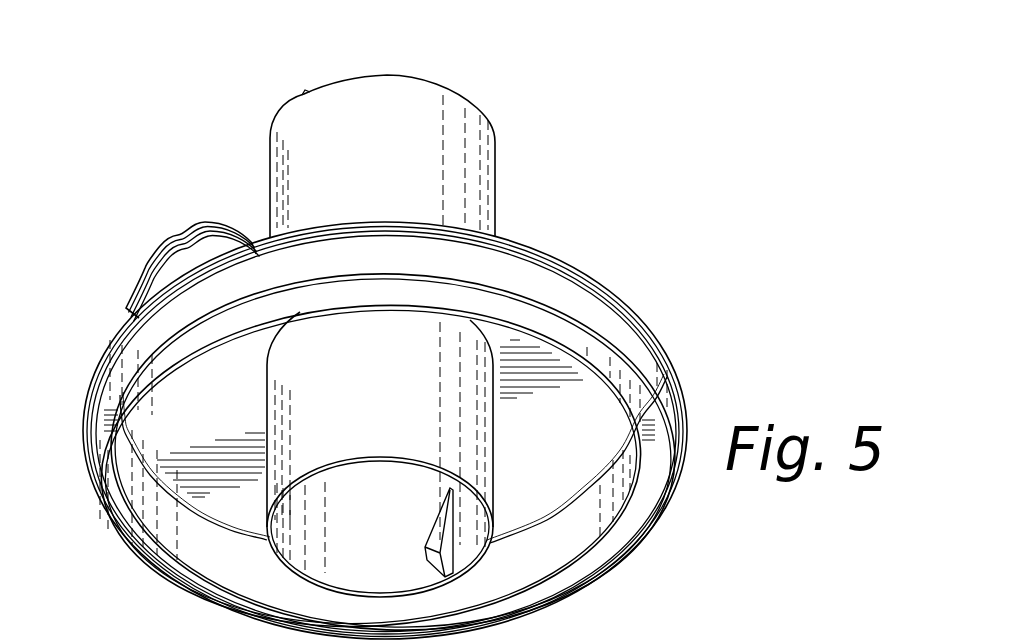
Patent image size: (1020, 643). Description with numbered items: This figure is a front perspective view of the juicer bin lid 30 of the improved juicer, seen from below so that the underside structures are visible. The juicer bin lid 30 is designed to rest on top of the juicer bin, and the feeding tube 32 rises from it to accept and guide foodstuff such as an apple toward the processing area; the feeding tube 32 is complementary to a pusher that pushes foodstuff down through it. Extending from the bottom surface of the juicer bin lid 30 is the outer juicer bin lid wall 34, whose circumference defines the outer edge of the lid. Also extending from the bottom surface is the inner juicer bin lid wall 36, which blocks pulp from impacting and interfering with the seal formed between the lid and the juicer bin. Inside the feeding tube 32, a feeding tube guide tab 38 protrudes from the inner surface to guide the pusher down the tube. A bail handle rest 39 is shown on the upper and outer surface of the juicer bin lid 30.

The juicer bin lid 30 is at (252, 212).
The feeding tube 32 is at (478, 110).
The outer juicer bin lid wall 34 is at (190, 593).
The inner juicer bin lid wall 36 is at (471, 316).
The feeding tube guide tab 38 is at (457, 554).
The bail handle rest 39 is at (177, 235).